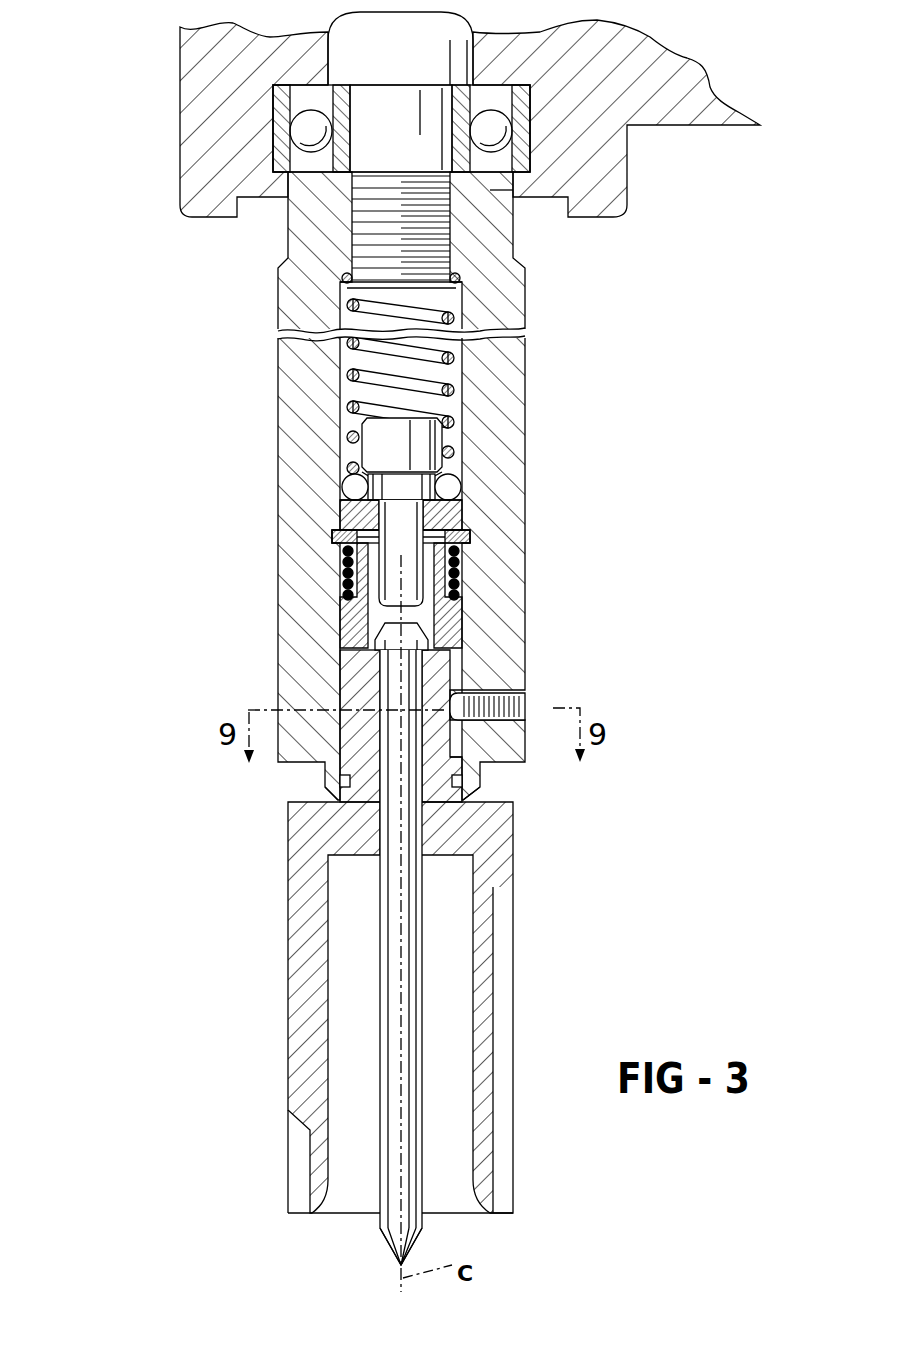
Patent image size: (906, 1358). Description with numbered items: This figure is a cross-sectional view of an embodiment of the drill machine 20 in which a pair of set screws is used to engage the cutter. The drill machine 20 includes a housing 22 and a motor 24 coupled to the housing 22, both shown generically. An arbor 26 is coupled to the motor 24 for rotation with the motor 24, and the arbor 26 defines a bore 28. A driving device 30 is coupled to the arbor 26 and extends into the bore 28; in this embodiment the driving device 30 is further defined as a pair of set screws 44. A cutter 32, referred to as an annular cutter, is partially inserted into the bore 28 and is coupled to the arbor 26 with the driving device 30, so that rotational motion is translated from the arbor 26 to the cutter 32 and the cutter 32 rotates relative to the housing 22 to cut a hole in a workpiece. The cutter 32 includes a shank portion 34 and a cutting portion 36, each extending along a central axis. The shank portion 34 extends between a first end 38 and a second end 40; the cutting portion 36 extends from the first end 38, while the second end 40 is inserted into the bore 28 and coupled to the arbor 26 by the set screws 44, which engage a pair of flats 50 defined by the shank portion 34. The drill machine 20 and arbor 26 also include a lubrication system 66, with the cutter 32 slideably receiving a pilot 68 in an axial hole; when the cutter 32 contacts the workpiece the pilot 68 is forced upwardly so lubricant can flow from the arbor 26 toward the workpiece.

The drill machine 20 is at (207, 575).
The housing 22 is at (182, 150).
The motor 24 is at (378, 253).
The arbor 26 is at (517, 388).
The bore 28 is at (462, 641).
The driving device 30 is at (508, 693).
The pair of set screws 44 is at (487, 706).
The cutter 32 is at (288, 931).
The shank portion 34 is at (342, 684).
The cutting portion 36 is at (503, 918).
The first end 38 is at (338, 800).
The second end 40 is at (338, 640).
The pair of flats 50 is at (455, 737).
The lubrication system 66 is at (352, 452).
The pilot 68 is at (392, 1222).